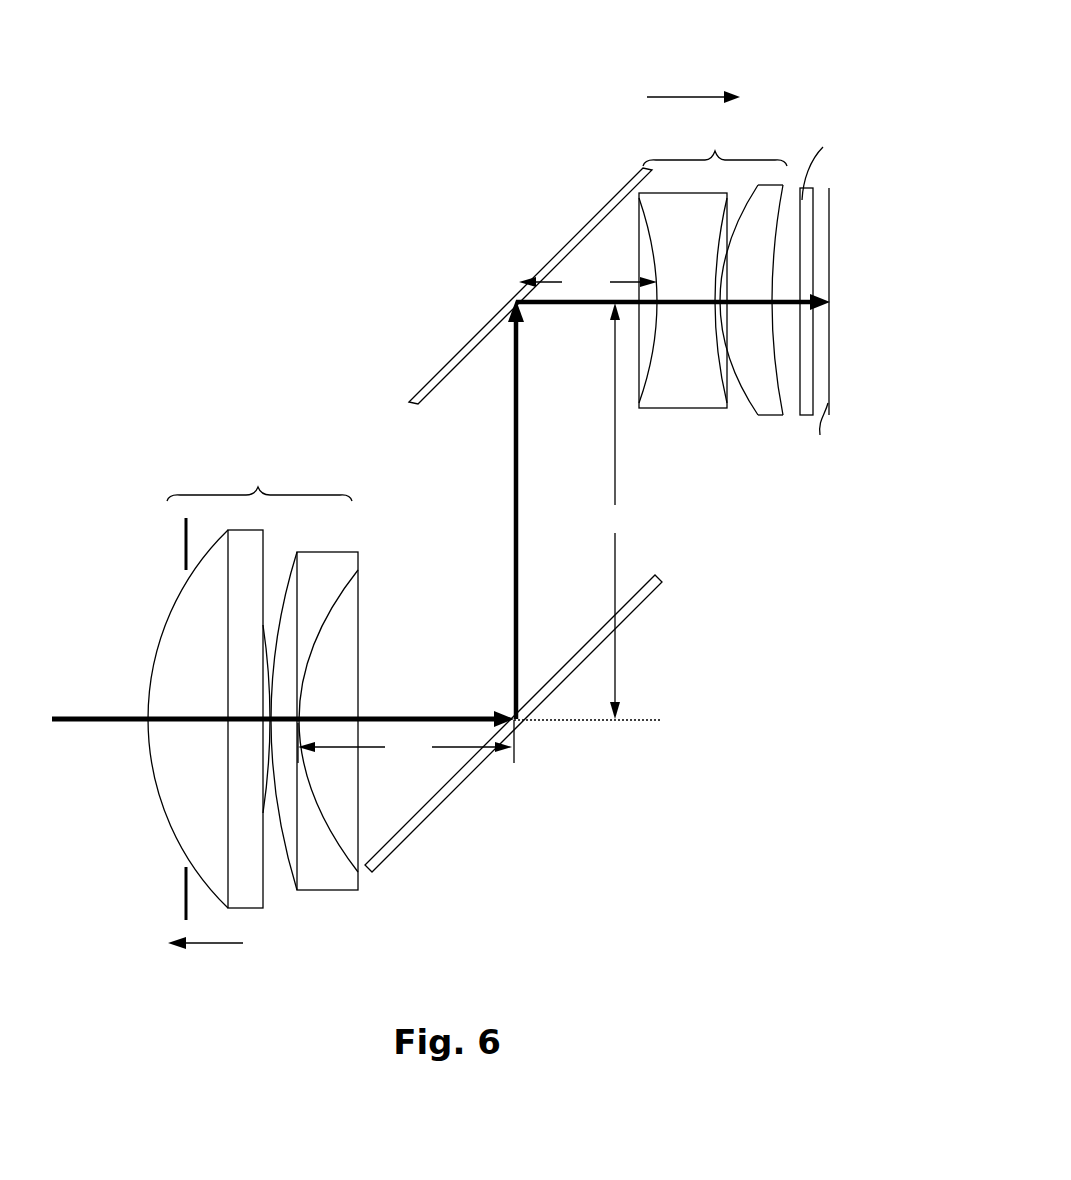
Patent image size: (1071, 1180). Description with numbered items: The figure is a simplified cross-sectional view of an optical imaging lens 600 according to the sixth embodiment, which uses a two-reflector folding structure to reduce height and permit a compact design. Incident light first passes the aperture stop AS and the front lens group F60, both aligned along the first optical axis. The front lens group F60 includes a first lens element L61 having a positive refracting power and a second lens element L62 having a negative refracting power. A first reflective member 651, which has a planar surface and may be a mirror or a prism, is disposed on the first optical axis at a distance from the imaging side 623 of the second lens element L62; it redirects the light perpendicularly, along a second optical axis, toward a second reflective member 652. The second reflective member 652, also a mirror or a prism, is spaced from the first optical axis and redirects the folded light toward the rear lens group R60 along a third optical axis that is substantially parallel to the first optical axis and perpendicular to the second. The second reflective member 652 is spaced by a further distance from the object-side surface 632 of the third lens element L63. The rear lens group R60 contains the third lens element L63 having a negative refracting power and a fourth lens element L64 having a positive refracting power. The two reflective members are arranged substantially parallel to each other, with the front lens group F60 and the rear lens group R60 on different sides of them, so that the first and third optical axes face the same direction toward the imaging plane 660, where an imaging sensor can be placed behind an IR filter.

The optical imaging lens 600 is at (806, 62).
The imaging side of second lens element 623 is at (312, 643).
The object-side surface of lens element 632 is at (646, 236).
The first reflective member 651 is at (467, 773).
The second reflective member 652 is at (418, 384).
The imaging plane 660 is at (830, 198).
The first lens element L61 is at (209, 706).
The second lens element L62 is at (343, 729).
The third lens element L63 is at (638, 288).
The fourth lens element L64 is at (751, 290).
The front lens group F60 is at (259, 479).
The rear lens group R60 is at (715, 144).
The aperture stop AS is at (170, 719).